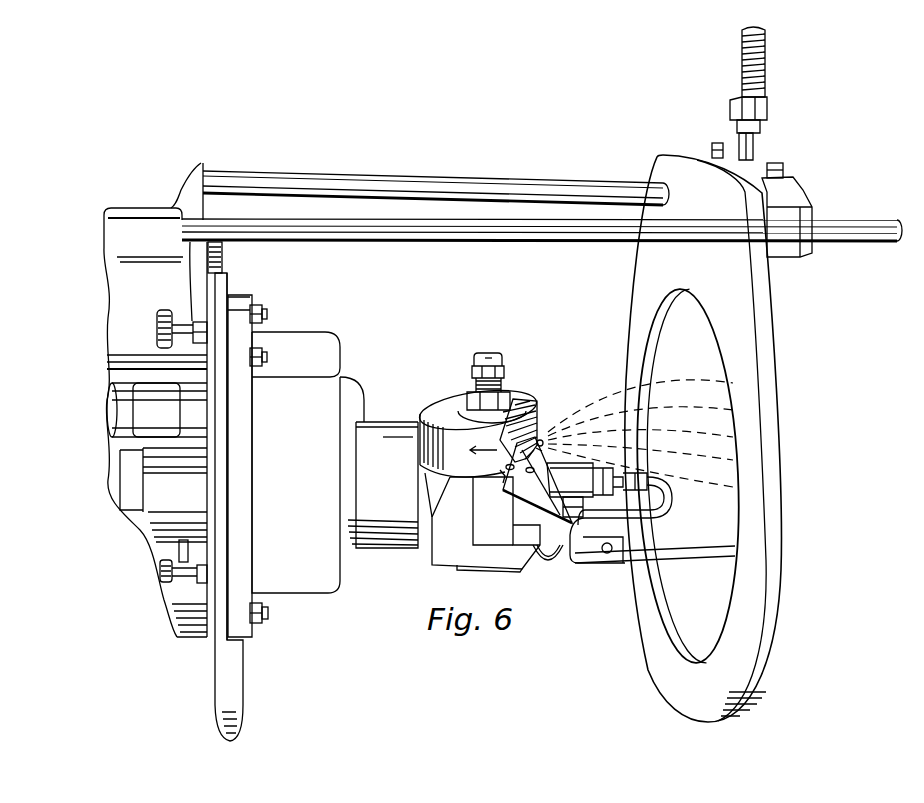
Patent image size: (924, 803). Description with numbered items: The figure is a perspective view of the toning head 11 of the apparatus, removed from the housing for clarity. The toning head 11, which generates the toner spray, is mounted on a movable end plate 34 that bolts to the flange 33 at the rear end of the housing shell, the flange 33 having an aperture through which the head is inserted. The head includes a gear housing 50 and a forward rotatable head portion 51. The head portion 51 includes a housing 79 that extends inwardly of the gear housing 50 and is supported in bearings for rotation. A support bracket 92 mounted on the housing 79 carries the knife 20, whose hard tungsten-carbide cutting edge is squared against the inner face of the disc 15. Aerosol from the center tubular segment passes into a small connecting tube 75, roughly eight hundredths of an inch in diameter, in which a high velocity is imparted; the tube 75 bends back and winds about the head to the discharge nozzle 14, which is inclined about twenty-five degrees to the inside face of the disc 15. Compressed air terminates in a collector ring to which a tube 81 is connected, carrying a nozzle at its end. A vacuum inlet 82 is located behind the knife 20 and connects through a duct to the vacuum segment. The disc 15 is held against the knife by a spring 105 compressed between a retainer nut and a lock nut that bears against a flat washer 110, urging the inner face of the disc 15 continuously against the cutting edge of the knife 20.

The toning head 11 is at (570, 398).
The discharge nozzle 14 is at (543, 444).
The disc 15 is at (532, 413).
The knife 20 is at (503, 480).
The flange 33 is at (778, 487).
The movable end plate 34 is at (225, 277).
The gear housing 50 is at (313, 577).
The forward rotatable head portion 51 is at (416, 584).
The connecting tube 75 is at (670, 497).
The housing 79 is at (433, 482).
The tube 81 is at (703, 560).
The vacuum inlet 82 is at (507, 473).
The support bracket 92 is at (495, 523).
The spring 105 is at (503, 373).
The flat washer 110 is at (507, 408).